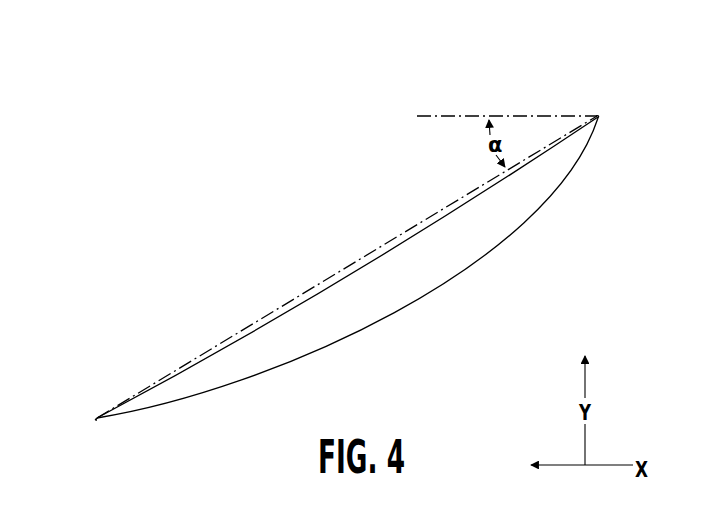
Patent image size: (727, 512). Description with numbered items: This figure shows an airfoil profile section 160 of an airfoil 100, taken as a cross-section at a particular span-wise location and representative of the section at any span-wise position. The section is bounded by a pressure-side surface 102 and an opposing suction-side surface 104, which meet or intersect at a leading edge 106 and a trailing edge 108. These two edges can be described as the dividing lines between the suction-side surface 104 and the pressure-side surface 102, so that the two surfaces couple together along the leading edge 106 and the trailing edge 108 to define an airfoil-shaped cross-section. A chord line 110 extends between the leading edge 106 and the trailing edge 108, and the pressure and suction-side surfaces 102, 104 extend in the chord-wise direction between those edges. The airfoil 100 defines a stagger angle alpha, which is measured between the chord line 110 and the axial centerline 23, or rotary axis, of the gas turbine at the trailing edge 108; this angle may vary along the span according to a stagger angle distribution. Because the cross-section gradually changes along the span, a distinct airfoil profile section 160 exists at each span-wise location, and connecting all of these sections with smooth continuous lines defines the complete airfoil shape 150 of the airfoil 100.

The axial centerline 23 is at (437, 115).
The airfoil 100 is at (335, 227).
The pressure-side surface 102 is at (253, 332).
The suction-side surface 104 is at (471, 268).
The leading edge 106 is at (598, 115).
The trailing edge 108 is at (97, 416).
The chord line 110 is at (370, 252).
The airfoil shape 150 is at (188, 156).
The airfoil profile section 160 is at (358, 143).